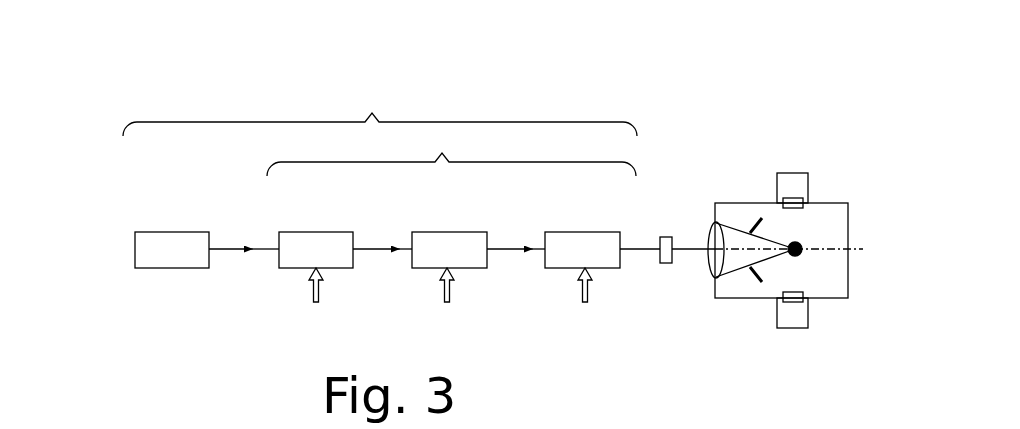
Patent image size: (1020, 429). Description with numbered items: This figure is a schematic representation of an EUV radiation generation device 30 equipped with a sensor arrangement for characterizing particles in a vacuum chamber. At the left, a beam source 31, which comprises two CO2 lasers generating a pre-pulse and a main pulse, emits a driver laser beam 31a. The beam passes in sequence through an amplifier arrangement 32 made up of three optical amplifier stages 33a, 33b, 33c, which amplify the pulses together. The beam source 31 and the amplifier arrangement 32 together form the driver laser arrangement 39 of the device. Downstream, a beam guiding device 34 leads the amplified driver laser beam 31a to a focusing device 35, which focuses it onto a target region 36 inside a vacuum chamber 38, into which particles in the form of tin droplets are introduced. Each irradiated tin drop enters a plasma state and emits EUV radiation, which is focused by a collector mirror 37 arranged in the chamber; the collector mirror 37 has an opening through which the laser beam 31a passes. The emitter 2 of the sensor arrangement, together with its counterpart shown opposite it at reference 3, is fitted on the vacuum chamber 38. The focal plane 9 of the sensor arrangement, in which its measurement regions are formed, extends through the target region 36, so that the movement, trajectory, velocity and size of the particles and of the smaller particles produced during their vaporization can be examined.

The EUV radiation generation device 30 is at (132, 183).
The driver laser arrangement 39 is at (380, 109).
The amplifier arrangement 32 is at (451, 150).
The beam source 31 is at (175, 250).
The driver laser beam 31a is at (234, 247).
The amplifier stage 33a is at (322, 250).
The amplifier stage 33b is at (455, 250).
The amplifier stage 33c is at (584, 250).
The beam guiding device 34 is at (693, 252).
The vacuum chamber 38 is at (755, 200).
The emitter 2 is at (793, 185).
The second electrode 3 is at (801, 314).
The focusing device 35 is at (712, 238).
The collector mirror 37 is at (748, 274).
The focal plane 9 is at (827, 252).
The target region 36 is at (801, 243).